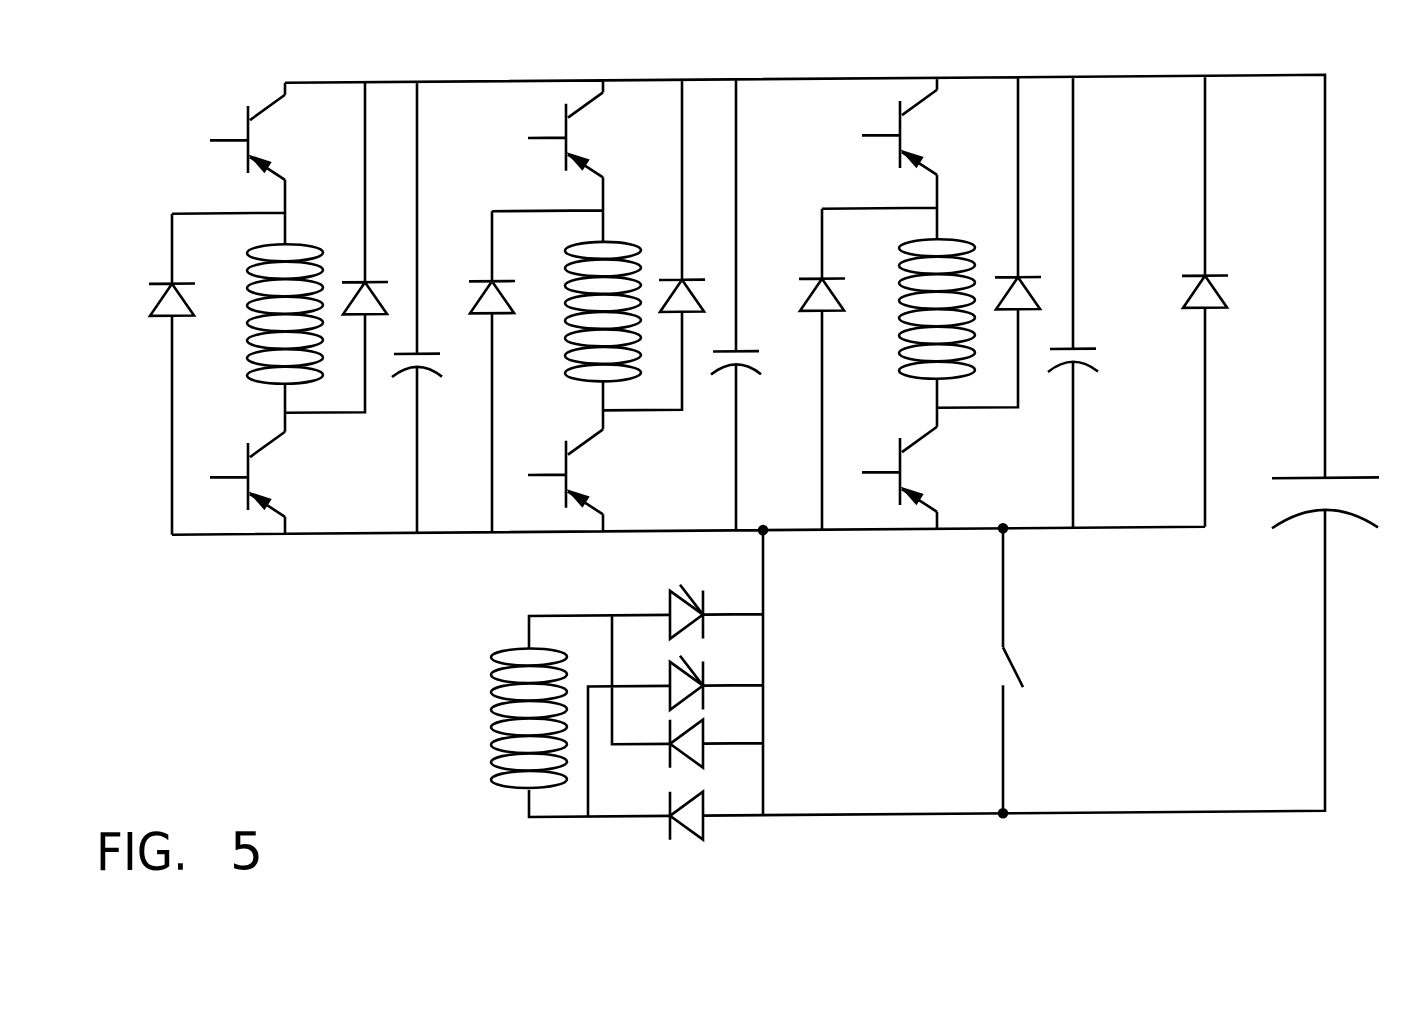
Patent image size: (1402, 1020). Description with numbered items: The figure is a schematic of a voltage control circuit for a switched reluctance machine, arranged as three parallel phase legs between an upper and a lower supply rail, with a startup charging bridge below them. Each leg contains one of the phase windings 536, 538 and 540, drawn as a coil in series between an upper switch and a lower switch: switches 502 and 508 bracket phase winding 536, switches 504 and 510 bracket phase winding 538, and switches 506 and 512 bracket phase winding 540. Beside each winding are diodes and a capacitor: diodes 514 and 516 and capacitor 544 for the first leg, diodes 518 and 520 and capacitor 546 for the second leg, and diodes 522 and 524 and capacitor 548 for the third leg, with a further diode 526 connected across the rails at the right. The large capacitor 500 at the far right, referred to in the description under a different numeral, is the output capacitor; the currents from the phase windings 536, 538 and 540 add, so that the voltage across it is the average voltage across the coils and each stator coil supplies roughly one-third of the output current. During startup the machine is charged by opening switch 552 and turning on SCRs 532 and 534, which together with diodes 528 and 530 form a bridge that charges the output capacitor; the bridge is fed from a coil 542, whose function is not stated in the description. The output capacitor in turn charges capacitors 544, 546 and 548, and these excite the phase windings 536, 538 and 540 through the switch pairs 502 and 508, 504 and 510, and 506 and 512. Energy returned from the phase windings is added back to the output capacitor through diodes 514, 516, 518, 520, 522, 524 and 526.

The DC bus capacitor 500 is at (1275, 534).
The switch 502 is at (266, 116).
The switch 504 is at (585, 113).
The switch 506 is at (918, 108).
The switch 508 is at (262, 453).
The switch 510 is at (582, 455).
The switch 512 is at (918, 452).
The diode 514 is at (160, 284).
The diode 516 is at (363, 285).
The diode 518 is at (492, 285).
The diode 520 is at (682, 285).
The diode 522 is at (822, 285).
The diode 524 is at (1018, 285).
The diode 526 is at (1200, 285).
The diode 528 is at (705, 833).
The diode 530 is at (705, 733).
The SCR 532 is at (668, 613).
The SCR 534 is at (705, 704).
The phase winding 536 is at (268, 246).
The phase winding 538 is at (586, 247).
The phase winding 540 is at (918, 247).
The inductor winding 542 is at (492, 690).
The capacitor 544 is at (397, 378).
The capacitor 546 is at (732, 376).
The capacitor 548 is at (1083, 372).
The switch 552 is at (1016, 678).